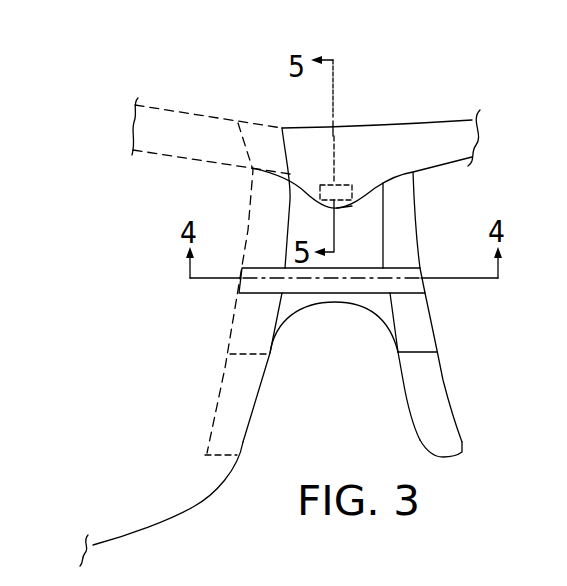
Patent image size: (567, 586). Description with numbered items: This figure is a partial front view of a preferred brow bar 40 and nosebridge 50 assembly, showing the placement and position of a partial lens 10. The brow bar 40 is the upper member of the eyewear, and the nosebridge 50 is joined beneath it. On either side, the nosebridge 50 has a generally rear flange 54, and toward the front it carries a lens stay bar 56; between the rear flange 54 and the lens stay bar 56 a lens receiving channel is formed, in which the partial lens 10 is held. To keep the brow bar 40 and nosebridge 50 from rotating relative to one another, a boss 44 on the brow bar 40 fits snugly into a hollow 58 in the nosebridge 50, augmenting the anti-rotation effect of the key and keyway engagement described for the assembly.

The partial lens 10 is at (148, 531).
The brow bar 40 is at (455, 121).
The boss 44 is at (366, 190).
The nosebridge 50 is at (356, 399).
The rear flange 54 is at (465, 441).
The lens stay bar 56 is at (424, 295).
The hollow 58 is at (347, 208).